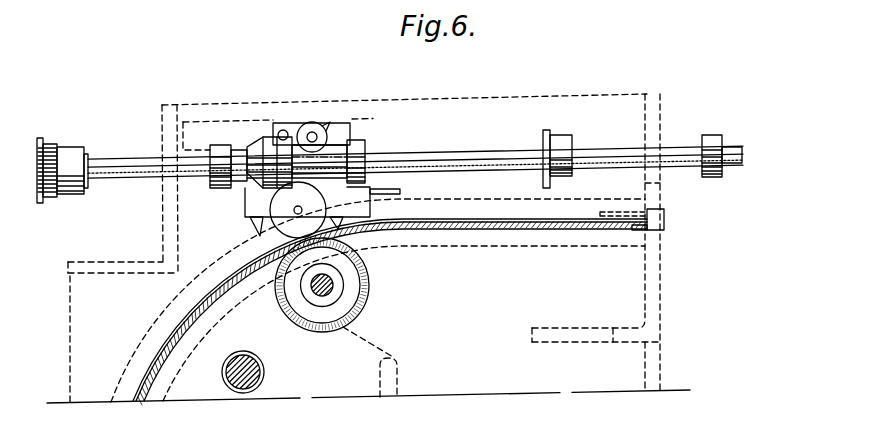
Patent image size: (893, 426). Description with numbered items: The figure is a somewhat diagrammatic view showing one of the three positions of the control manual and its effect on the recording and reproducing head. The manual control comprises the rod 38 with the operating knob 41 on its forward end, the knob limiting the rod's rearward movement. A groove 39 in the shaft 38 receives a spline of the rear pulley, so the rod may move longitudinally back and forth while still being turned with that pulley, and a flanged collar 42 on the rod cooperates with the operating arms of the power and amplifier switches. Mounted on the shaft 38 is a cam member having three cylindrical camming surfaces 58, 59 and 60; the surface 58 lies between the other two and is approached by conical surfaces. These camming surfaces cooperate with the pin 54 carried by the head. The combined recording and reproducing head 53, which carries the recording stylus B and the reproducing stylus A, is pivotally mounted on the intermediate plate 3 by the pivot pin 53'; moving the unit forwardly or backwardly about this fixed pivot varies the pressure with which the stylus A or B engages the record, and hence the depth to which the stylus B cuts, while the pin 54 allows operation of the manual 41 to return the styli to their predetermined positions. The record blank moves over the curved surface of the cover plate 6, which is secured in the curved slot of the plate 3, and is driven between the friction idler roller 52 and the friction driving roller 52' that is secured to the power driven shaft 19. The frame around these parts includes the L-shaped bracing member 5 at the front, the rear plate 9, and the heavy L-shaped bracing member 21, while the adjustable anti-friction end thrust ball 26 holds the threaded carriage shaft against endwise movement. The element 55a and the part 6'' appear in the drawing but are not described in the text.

The operating knob 41 is at (69, 148).
The cylindrical camming surface 59 is at (233, 143).
The cylindrical camming surface 58 is at (267, 137).
The pivot pin 53' is at (311, 98).
The pin 54 is at (316, 132).
The cylindrical camming surface 60 is at (334, 156).
The collar 55a is at (353, 134).
The rod 38 is at (463, 155).
The intermediate plate 3 is at (553, 93).
The flanged collar 42 is at (550, 134).
The groove 39 is at (739, 147).
The rail bracket 6'' is at (659, 208).
The curved cover plate 6 is at (390, 312).
The rear plate 9 is at (555, 338).
The friction idler roller 52 is at (312, 210).
The recording and reproducing head 53 is at (298, 204).
The reproducing stylus A is at (250, 226).
The recording stylus B is at (350, 218).
The L-shaped bracing member 5 is at (89, 255).
The friction driving roller 52' is at (350, 285).
The shaft 19 is at (326, 294).
The L-shaped bracing member 21 is at (398, 368).
The end thrust ball 26 is at (265, 380).